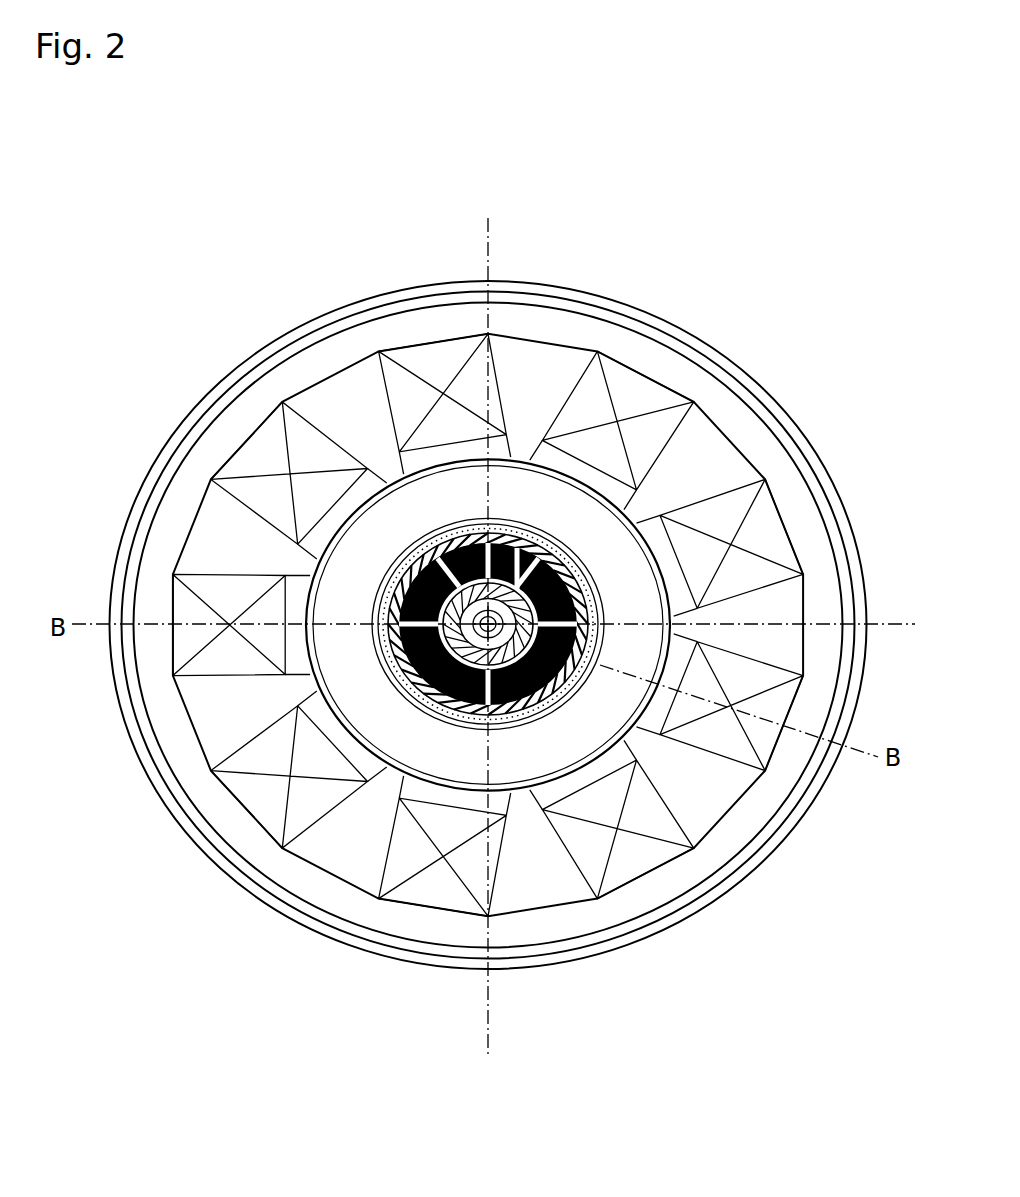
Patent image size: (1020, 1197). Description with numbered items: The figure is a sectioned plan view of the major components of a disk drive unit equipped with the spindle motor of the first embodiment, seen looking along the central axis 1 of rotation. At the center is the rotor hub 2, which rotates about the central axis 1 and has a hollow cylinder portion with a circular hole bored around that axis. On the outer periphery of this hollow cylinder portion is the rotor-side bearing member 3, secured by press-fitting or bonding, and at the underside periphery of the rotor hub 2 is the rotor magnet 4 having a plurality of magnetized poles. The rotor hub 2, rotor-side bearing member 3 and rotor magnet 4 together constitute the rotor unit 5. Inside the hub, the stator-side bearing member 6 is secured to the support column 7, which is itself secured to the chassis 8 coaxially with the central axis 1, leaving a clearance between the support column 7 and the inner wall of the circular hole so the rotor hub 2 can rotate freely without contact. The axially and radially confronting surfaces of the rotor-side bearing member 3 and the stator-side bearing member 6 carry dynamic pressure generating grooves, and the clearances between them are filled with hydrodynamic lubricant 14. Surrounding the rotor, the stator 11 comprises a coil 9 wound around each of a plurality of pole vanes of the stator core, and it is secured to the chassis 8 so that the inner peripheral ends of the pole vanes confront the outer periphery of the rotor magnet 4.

The central axis 1 is at (598, 580).
The rotor hub 2 is at (400, 543).
The rotor-side bearing member 3 is at (405, 558).
The rotor magnet 4 is at (345, 582).
The rotor unit 5 is at (742, 373).
The stator-side bearing member 6 is at (513, 537).
The support column 7 is at (580, 560).
The chassis 8 is at (470, 533).
The coil 9 is at (580, 393).
The stator 11 is at (683, 370).
The hydrodynamic lubricant 14 is at (422, 580).